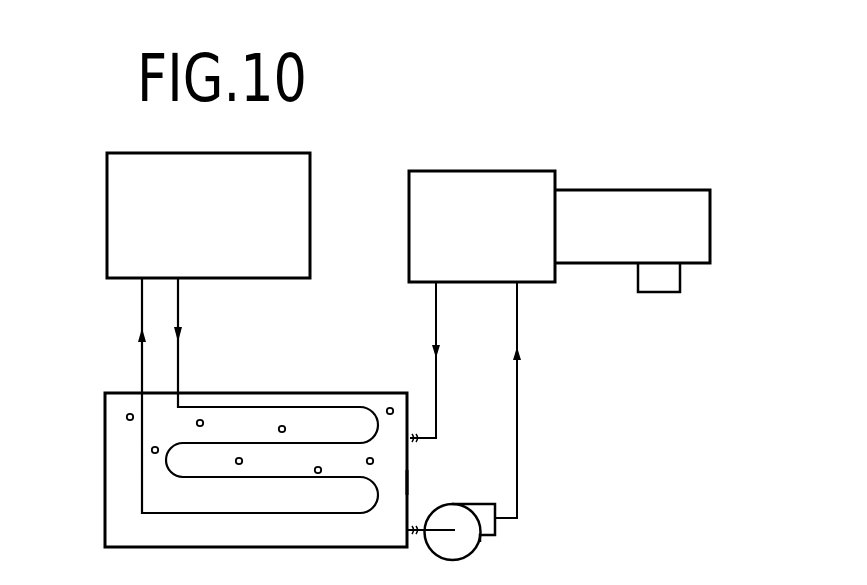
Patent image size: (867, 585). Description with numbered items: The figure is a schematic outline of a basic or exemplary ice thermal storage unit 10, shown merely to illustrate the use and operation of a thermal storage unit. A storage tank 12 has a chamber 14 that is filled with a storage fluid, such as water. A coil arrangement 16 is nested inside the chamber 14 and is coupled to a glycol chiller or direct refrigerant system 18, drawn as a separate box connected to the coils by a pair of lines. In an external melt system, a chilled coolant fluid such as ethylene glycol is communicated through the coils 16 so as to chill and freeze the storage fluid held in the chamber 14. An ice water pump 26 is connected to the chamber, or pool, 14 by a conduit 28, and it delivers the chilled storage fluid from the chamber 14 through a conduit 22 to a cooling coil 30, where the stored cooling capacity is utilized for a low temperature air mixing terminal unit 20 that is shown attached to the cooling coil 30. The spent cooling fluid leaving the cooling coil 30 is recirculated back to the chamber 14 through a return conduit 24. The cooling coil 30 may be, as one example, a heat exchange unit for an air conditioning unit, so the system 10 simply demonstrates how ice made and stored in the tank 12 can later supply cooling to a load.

The thermal storage unit 10 is at (612, 468).
The storage tank 12 is at (407, 481).
The chamber 14 is at (383, 437).
The coil arrangement 16 is at (220, 478).
The glycol chiller or direct refrigerant system 18 is at (107, 220).
The low temperature air mixing terminal unit 20 is at (625, 190).
The conduit 22 is at (517, 413).
The return conduit 24 is at (436, 300).
The ice water pump 26 is at (478, 546).
The conduit 28 is at (415, 530).
The cooling coil 30 is at (477, 171).